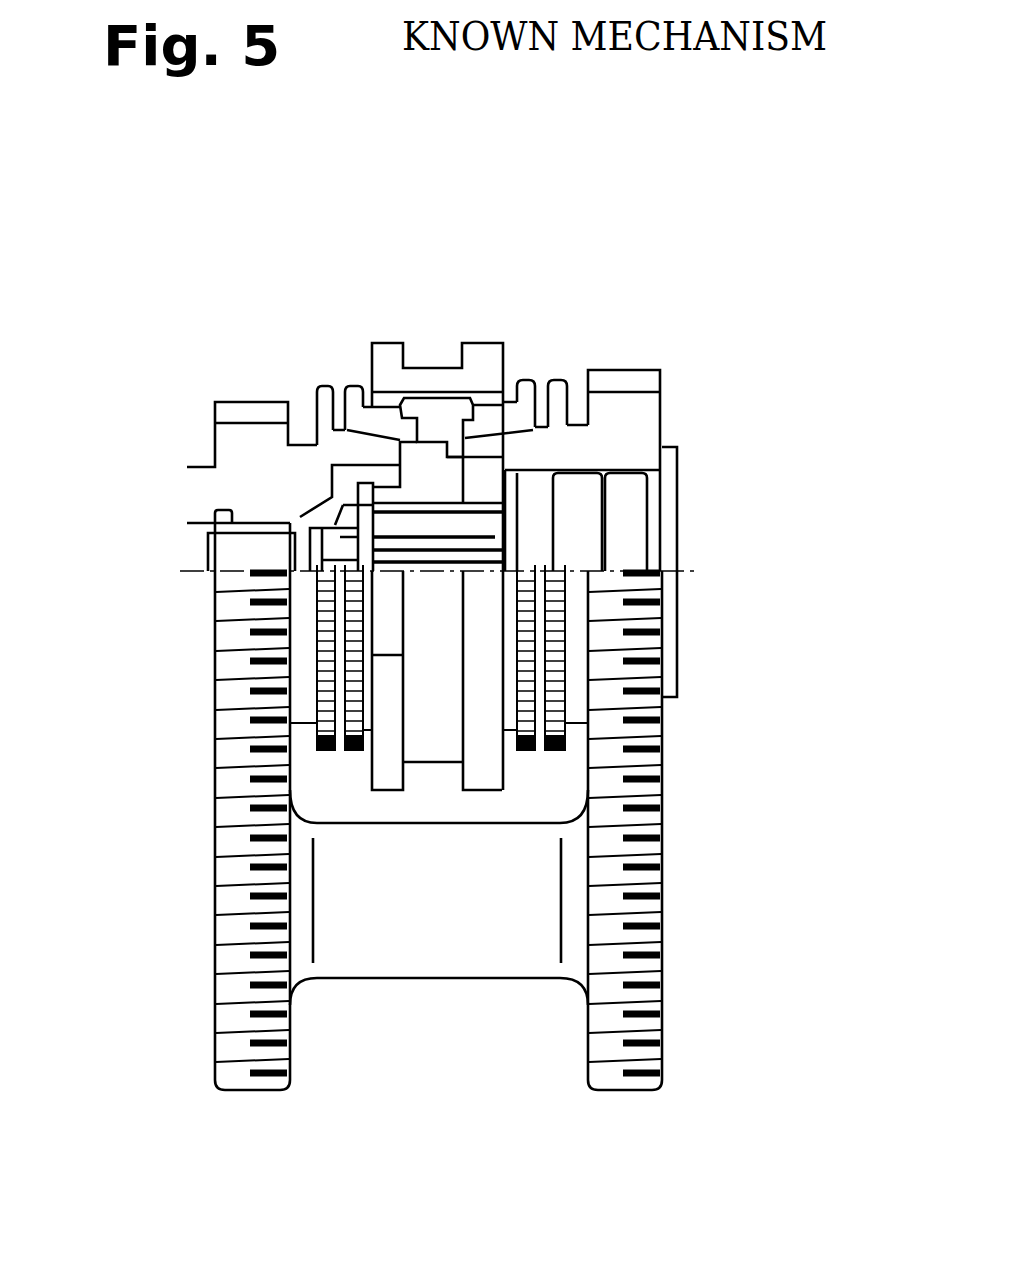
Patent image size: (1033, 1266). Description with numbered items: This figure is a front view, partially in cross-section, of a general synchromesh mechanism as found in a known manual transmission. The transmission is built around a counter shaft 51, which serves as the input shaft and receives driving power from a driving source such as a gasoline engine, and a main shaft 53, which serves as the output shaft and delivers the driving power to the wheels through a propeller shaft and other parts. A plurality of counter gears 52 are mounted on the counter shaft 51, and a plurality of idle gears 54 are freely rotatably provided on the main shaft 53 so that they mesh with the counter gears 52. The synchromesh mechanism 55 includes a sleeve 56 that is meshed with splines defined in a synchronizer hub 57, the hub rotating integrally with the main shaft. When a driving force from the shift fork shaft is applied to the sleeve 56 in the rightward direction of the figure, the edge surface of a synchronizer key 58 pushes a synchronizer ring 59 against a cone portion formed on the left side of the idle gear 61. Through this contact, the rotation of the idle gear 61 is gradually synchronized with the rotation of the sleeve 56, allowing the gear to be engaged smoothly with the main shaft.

The counter shaft 51 is at (388, 963).
The counter gears 52 is at (225, 1008).
The main shaft 53 is at (668, 620).
The idle gears 54 is at (227, 693).
The synchromesh mechanism 55 is at (480, 302).
The sleeve 56 is at (392, 352).
The synchronizer hub 57 is at (427, 488).
The synchronizer key 58 is at (427, 407).
The synchronizer ring 59 is at (528, 405).
The idle gear 61 is at (640, 424).